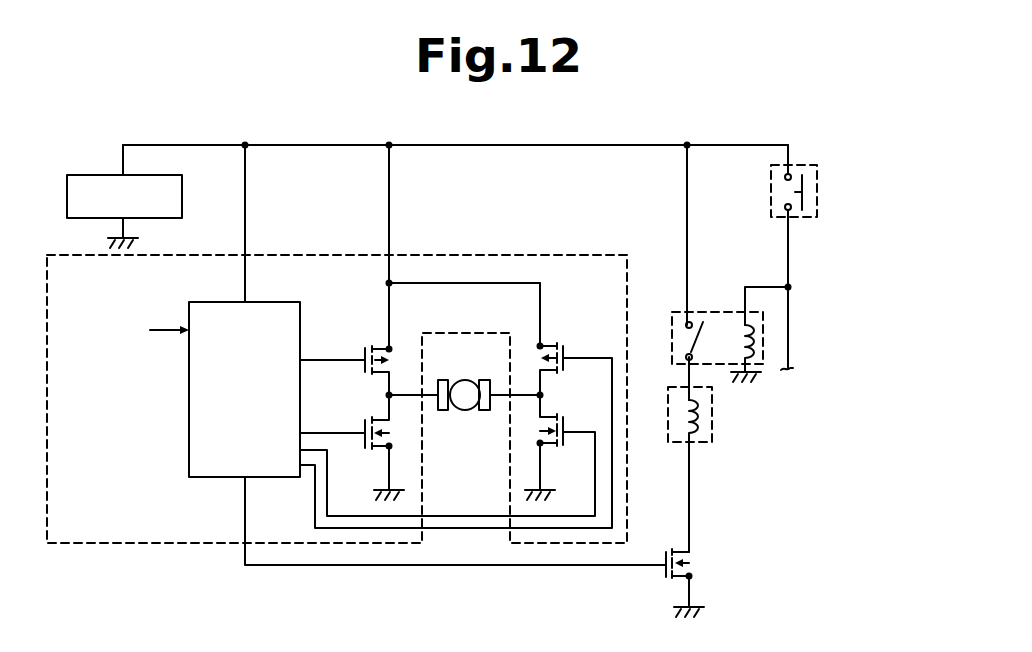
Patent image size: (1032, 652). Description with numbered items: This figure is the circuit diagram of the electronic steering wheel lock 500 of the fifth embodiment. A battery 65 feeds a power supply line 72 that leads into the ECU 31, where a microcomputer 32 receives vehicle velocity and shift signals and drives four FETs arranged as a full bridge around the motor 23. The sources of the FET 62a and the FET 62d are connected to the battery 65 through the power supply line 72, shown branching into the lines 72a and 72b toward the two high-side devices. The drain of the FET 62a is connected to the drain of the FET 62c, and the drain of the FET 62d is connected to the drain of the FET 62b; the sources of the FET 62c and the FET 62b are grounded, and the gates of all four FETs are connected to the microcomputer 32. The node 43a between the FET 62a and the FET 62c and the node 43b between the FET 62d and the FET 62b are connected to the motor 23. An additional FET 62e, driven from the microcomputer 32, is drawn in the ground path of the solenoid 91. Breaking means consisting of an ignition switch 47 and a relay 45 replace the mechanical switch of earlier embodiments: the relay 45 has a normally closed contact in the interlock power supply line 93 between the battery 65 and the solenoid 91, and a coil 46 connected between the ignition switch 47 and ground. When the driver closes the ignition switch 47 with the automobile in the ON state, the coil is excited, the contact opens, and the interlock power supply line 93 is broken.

The electronic steering wheel lock 500 is at (775, 112).
The battery 65 is at (103, 173).
The power supply line 72 is at (390, 202).
The power supply line 72a is at (389, 305).
The power supply line 72b is at (539, 312).
The interlock power supply line 93 is at (623, 147).
The ECU 31 is at (513, 253).
The microcomputer 32 is at (236, 483).
The FET 62a is at (364, 350).
The FET 62b is at (565, 449).
The FET 62c is at (365, 450).
The FET 62d is at (566, 346).
The switching element (FET) 62e is at (665, 565).
The motor 23 is at (458, 380).
The node 43a is at (389, 397).
The node 43b is at (540, 397).
The ignition switch 47 is at (819, 178).
The relay 45 is at (674, 311).
The relay coil 46 is at (790, 329).
The solenoid 91 is at (713, 403).